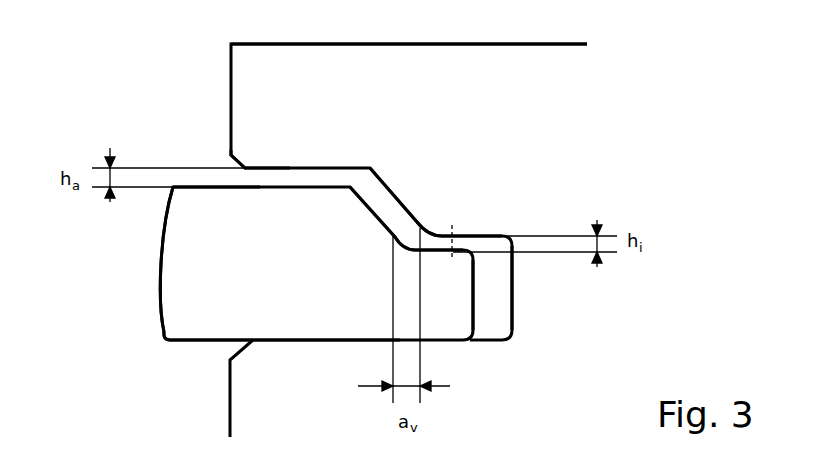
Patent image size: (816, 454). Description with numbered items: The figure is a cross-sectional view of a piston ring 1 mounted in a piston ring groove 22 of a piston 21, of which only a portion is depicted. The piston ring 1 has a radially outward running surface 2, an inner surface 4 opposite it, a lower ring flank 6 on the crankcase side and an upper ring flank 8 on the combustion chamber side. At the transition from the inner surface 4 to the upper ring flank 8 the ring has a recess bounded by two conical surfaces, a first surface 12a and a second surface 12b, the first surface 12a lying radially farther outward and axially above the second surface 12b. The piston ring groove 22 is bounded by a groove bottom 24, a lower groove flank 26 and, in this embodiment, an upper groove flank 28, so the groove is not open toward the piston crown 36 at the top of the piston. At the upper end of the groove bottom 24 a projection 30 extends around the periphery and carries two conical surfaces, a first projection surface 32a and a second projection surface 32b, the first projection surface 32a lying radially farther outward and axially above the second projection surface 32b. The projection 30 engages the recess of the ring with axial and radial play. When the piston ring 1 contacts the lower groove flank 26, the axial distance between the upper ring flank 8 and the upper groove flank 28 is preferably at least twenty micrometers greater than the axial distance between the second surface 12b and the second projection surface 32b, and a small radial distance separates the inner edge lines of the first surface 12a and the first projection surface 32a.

The piston ring 1 is at (255, 274).
The running surface 2 is at (160, 312).
The inner surface 4 is at (472, 320).
The lower ring flank 6 is at (188, 340).
The upper ring flank 8 is at (220, 188).
The first surface 12a is at (340, 232).
The second surface 12b is at (435, 250).
The piston 21 is at (400, 111).
The piston ring groove 22 is at (492, 285).
The groove bottom 24 is at (513, 300).
The lower groove flank 26 is at (327, 340).
The upper groove flank 28 is at (270, 167).
The projection 30 is at (425, 207).
The first projection surface 32a is at (393, 190).
The second projection surface 32b is at (490, 240).
The piston crown 36 is at (405, 43).